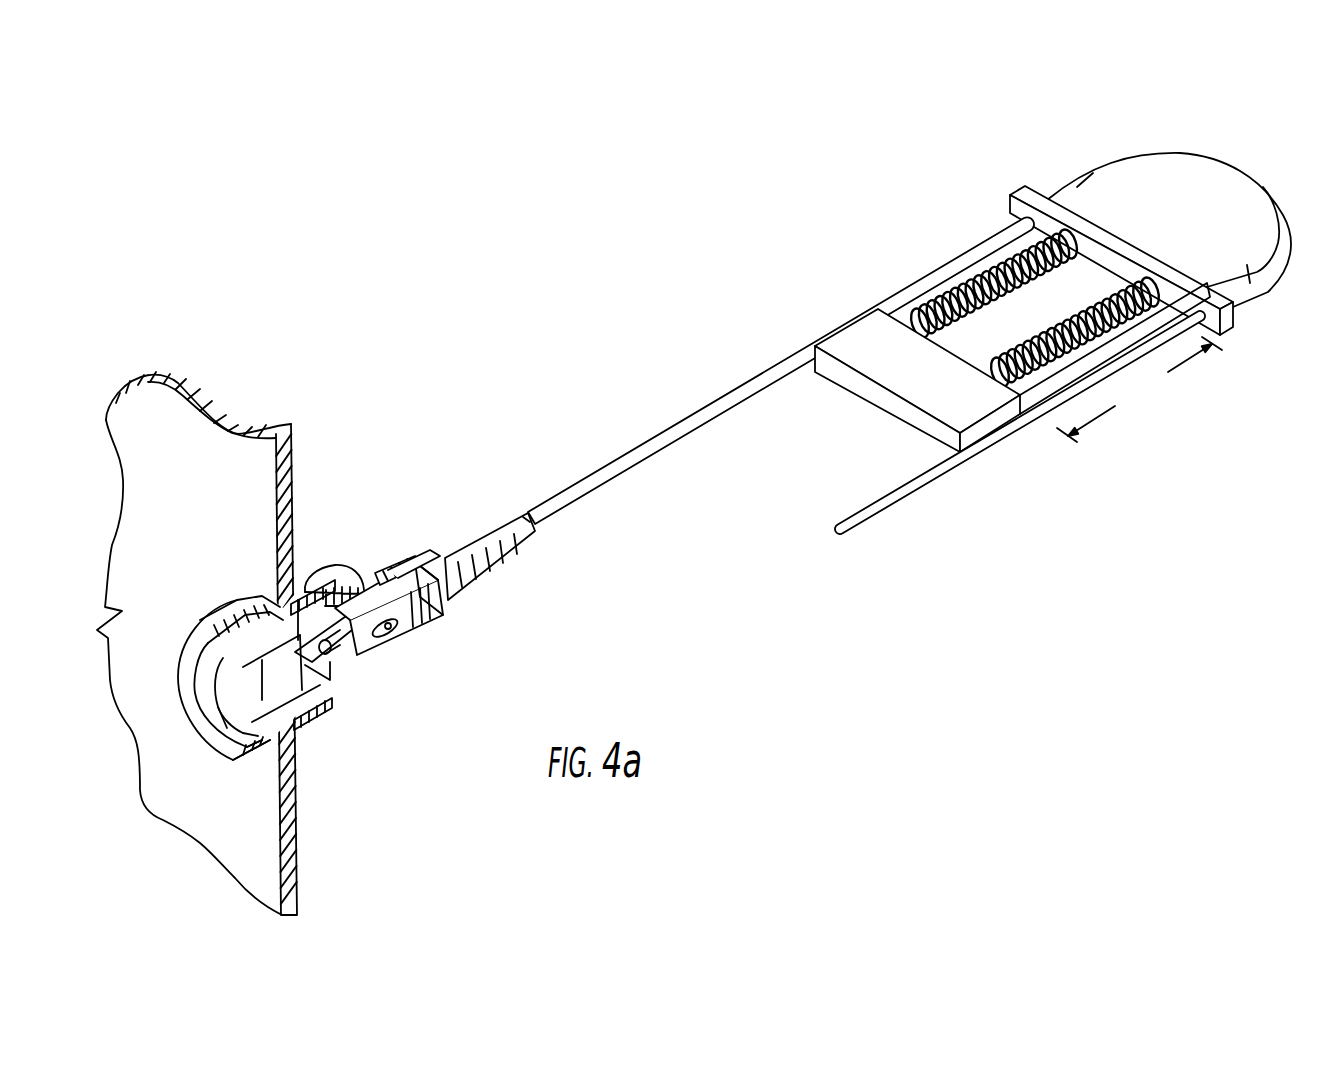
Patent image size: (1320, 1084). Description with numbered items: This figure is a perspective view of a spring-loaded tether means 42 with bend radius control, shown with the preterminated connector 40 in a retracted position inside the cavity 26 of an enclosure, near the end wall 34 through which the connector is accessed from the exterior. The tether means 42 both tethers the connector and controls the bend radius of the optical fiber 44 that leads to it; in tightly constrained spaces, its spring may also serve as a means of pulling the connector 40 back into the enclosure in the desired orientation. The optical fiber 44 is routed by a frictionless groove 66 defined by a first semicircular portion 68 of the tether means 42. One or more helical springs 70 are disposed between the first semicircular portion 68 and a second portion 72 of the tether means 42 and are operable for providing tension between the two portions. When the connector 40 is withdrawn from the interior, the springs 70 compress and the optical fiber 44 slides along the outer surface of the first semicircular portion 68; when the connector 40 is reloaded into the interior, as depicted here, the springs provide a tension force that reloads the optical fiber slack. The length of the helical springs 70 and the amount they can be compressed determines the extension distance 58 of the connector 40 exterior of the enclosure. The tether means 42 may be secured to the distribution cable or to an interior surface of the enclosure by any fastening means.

The cavity 26 is at (422, 372).
The end wall 34 is at (244, 447).
The preterminated connector 40 is at (452, 556).
The tether means 42 is at (919, 295).
The optical fiber 44 is at (700, 416).
The extension distance 58 is at (1139, 389).
The frictionless groove 66 is at (1270, 262).
The first semicircular portion 68 is at (1150, 184).
The helical springs 70 is at (957, 305).
The second portion 72 is at (978, 400).